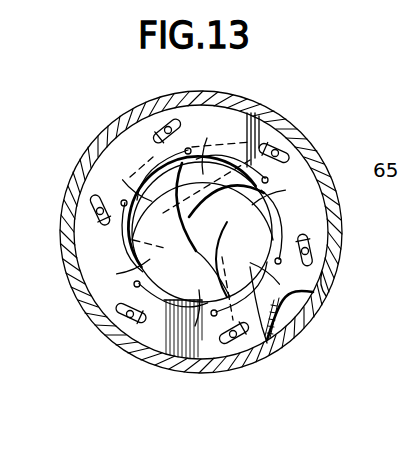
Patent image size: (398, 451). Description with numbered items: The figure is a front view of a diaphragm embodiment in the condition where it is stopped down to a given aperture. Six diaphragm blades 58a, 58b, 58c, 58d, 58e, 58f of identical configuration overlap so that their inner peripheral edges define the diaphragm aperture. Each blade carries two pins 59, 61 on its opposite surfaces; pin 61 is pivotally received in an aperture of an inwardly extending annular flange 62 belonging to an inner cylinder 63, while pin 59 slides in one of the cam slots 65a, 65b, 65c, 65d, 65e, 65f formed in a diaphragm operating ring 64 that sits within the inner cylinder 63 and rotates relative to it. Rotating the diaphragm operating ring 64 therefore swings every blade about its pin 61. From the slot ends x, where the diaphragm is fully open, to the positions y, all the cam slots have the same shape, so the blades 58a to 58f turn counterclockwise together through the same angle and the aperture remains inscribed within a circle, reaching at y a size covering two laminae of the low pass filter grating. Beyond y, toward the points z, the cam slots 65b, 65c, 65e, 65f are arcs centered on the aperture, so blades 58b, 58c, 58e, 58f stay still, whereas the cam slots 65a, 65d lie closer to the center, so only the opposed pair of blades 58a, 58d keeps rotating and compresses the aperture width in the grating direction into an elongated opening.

The diaphragm blade 58a is at (270, 183).
The diaphragm blade 58b is at (275, 352).
The diaphragm blade 58c is at (134, 286).
The diaphragm blade 58d is at (80, 283).
The diaphragm blade 58e is at (143, 186).
The diaphragm blade 58f is at (193, 142).
The pin 59 is at (160, 126).
The pin 61 is at (167, 362).
The inwardly extending annular flange 62 is at (308, 325).
The inner cylinder 63 is at (316, 300).
The diaphragm operating ring 64 is at (255, 360).
The cam slot 65a is at (318, 262).
The cam slot 65b is at (226, 358).
The cam slot 65c is at (118, 320).
The cam slot 65d is at (82, 208).
The cam slot 65e is at (172, 112).
The cam slot 65f is at (288, 152).
The slot end point x is at (292, 158).
The intermediate slot point y is at (262, 142).
The slot end point z is at (258, 124).